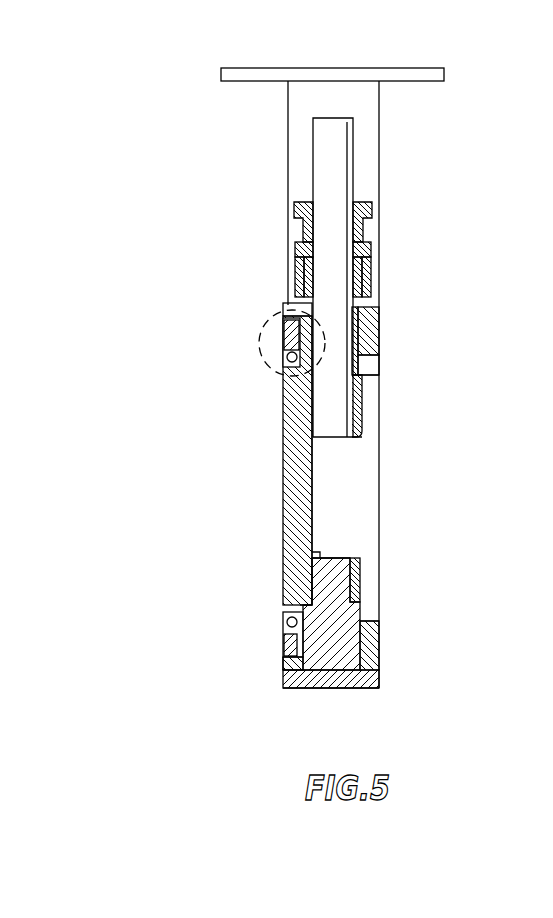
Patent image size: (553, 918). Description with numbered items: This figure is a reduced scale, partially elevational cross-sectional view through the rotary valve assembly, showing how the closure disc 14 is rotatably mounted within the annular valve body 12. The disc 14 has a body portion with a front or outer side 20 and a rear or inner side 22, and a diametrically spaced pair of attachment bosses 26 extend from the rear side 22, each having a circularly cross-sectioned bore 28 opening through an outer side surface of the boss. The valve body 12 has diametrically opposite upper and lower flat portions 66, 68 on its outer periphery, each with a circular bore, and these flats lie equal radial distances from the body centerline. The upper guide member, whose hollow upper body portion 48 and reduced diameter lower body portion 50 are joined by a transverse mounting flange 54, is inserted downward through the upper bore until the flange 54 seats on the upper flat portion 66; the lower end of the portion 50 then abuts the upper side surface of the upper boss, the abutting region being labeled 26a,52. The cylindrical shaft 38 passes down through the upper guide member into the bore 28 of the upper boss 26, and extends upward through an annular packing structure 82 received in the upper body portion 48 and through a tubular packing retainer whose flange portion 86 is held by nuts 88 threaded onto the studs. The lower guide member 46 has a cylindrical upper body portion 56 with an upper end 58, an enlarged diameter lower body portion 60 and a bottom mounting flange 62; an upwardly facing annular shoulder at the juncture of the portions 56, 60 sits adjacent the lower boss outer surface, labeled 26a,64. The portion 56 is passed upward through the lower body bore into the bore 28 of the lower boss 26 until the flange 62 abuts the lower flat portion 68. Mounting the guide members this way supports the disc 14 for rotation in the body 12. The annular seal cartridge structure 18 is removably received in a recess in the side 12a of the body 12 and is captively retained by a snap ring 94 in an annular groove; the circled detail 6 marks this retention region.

The annular valve body 12 is at (386, 434).
The side of the valve body 12a is at (280, 667).
The closure disc 14 is at (279, 493).
The seal cartridge structure 18 is at (280, 628).
The front side of the disc 20 is at (284, 459).
The rear side of the disc 22 is at (313, 480).
The attachment boss 26 is at (362, 397).
The boss outer side surface and lower end of upper guide member 26a,52 is at (358, 370).
The boss outer side surface and annular shoulder 26a,64 is at (358, 604).
The boss bore 28 is at (338, 434).
The cylindrical shaft 38 is at (340, 163).
The lower guide member 46 is at (293, 689).
The upper body portion of upper guide member 48 is at (371, 265).
The lower body portion of upper guide member 50 is at (380, 323).
The mounting flange of upper guide member 54 is at (296, 293).
The upper body portion of lower guide member 56 is at (333, 560).
The upper end of lower guide member 58 is at (323, 554).
The lower body portion of lower guide member 60 is at (338, 638).
The mounting flange of lower guide member 62 is at (380, 680).
The upper flat portion 66 is at (290, 302).
The lower flat portion 68 is at (297, 672).
The annular packing structure 82 is at (296, 272).
The flange portion of packing retainer member 86 is at (371, 234).
The nut 88 is at (294, 210).
The snap ring 94 is at (283, 658).
The detail circle 6 is at (262, 364).